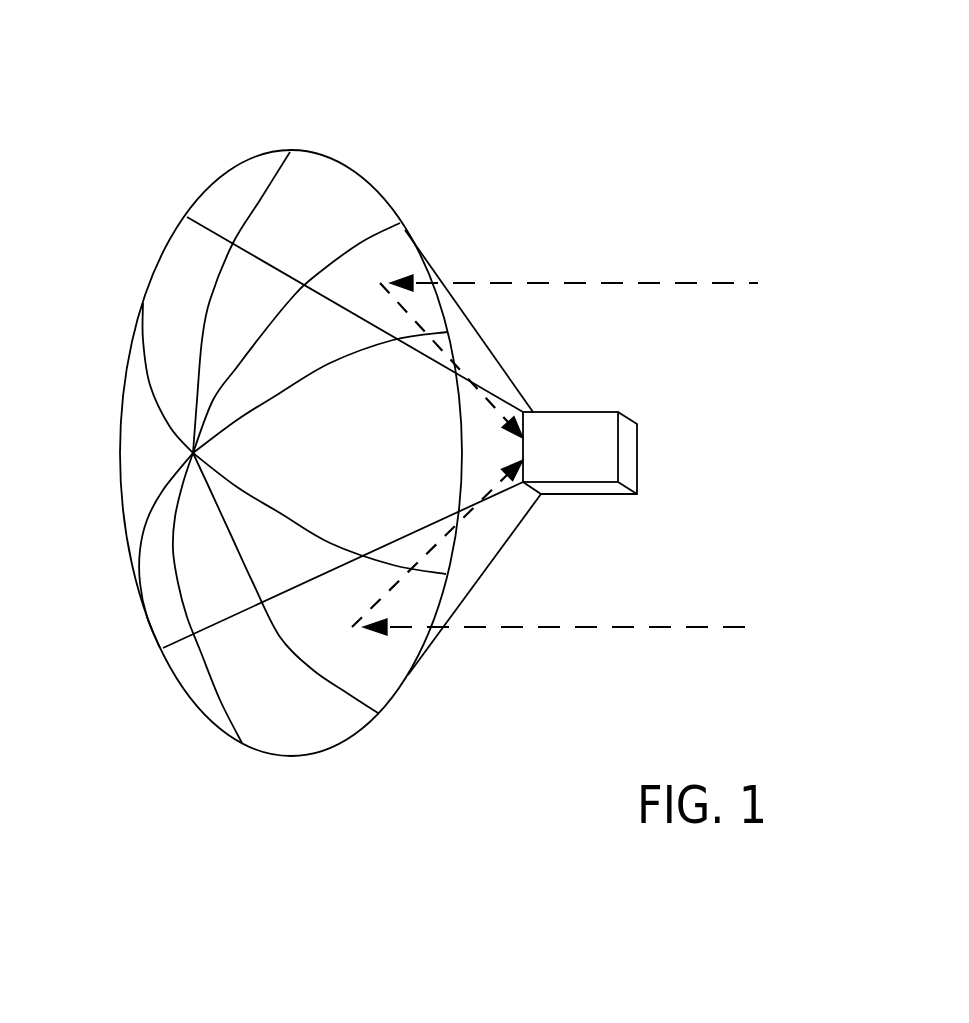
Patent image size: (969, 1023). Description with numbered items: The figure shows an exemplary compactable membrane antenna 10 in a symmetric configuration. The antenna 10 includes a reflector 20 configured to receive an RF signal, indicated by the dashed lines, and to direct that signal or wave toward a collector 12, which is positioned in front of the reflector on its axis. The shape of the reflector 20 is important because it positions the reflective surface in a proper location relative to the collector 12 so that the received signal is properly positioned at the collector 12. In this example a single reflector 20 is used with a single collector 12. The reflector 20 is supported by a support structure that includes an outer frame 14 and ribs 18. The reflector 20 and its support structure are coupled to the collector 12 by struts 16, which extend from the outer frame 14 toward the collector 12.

The antenna 10 is at (614, 232).
The collector 12 is at (637, 480).
The outer frame 14 is at (353, 170).
The struts 16 is at (268, 265).
The ribs 18 is at (148, 360).
The reflector 20 is at (190, 265).